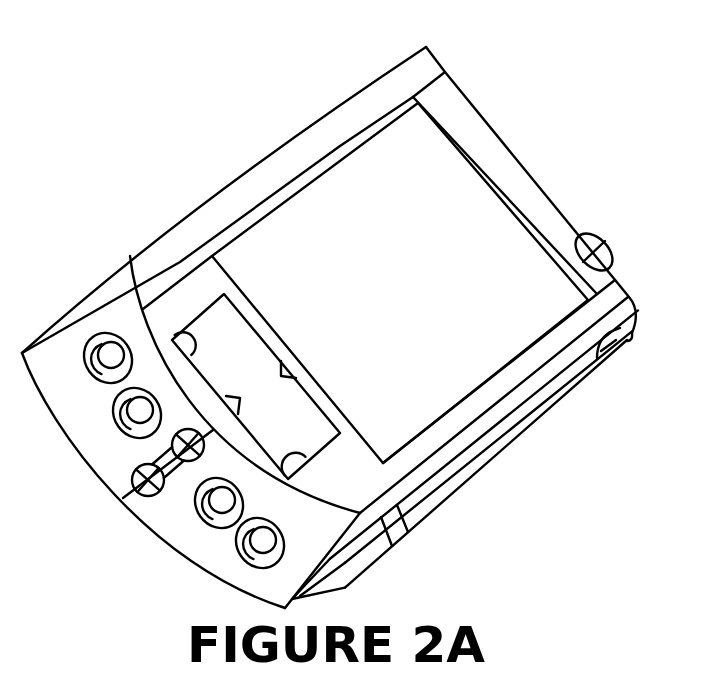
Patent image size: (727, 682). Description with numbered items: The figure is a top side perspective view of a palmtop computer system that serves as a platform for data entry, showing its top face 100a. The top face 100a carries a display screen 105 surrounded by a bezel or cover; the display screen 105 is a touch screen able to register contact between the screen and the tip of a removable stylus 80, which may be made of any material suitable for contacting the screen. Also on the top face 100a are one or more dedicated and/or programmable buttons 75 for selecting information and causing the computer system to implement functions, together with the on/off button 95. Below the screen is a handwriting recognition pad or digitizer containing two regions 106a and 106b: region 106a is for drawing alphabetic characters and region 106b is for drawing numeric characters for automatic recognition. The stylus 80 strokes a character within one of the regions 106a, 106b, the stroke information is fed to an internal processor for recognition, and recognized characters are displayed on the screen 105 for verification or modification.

The top face 100a is at (95, 28).
The buttons 75 is at (110, 352).
The stylus 80 is at (536, 418).
The on/off button 95 is at (606, 249).
The display screen 105 is at (418, 306).
The region 106a is at (267, 366).
The region 106b is at (320, 430).